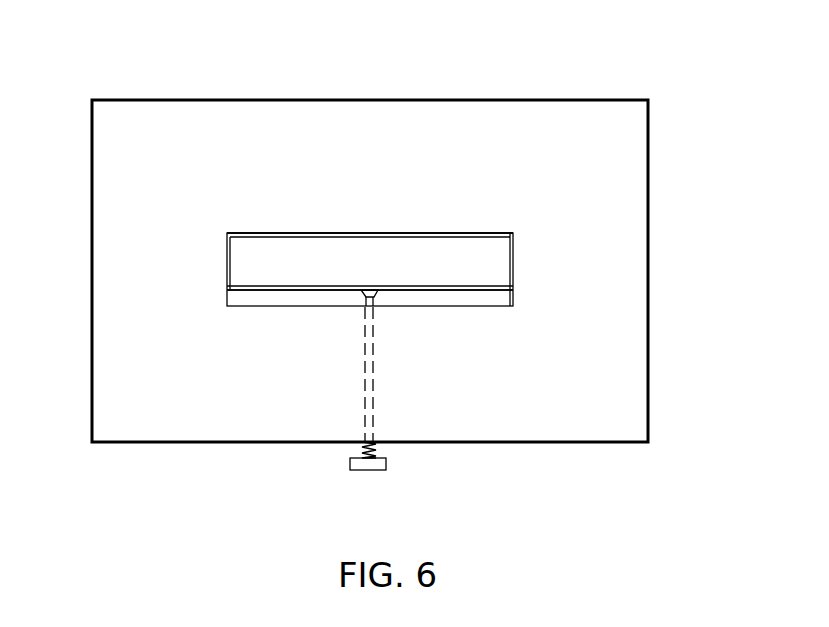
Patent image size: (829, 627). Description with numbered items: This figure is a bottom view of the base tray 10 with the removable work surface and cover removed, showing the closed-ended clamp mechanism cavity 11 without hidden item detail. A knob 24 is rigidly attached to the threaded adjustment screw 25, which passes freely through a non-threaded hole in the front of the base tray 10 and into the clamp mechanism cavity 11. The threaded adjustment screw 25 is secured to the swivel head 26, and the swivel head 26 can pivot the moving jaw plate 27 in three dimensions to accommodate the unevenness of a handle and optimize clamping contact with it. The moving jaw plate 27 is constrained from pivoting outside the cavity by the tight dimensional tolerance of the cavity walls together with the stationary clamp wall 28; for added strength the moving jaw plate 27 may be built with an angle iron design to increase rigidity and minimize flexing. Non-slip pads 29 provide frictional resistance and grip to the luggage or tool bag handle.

The Base Tray 10 is at (635, 403).
The Clamp Mechanism Cavity 11 is at (497, 259).
The Knob 24 is at (378, 471).
The Threaded Adjustment Screw 25 is at (360, 452).
The Swivel Head 26 is at (364, 296).
The Moving Jaw Plate 27 is at (232, 291).
The stationary clamp wall 28 is at (391, 233).
The Non-slip Pads 29 is at (513, 233).